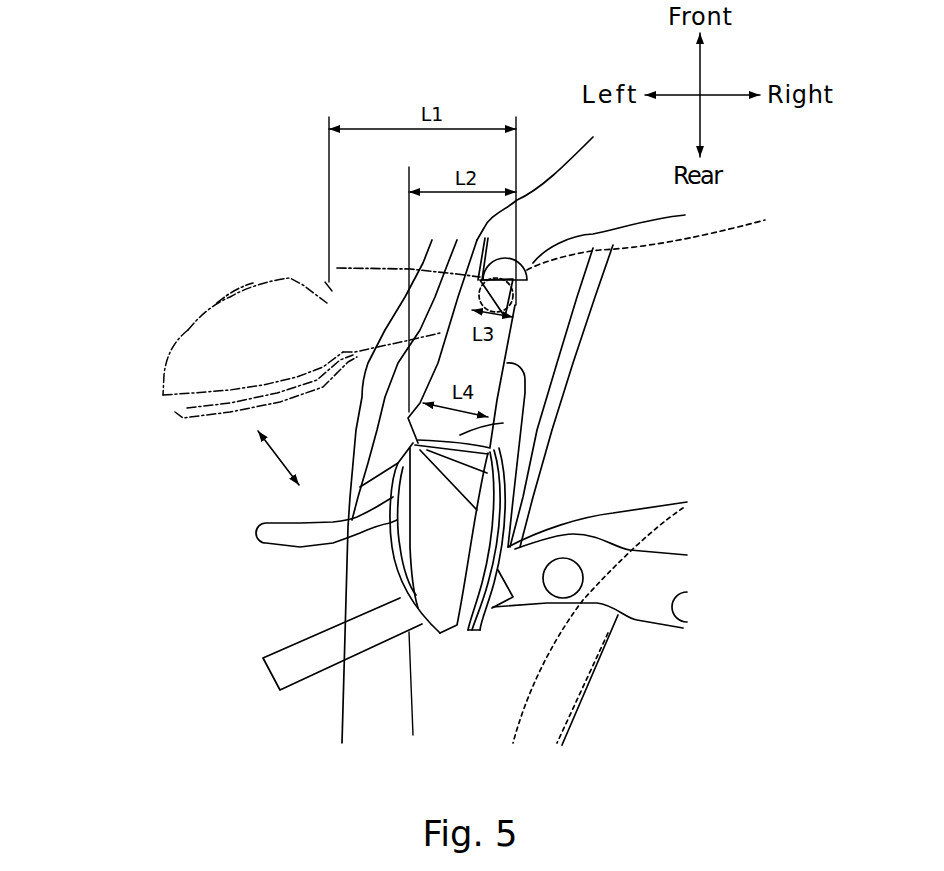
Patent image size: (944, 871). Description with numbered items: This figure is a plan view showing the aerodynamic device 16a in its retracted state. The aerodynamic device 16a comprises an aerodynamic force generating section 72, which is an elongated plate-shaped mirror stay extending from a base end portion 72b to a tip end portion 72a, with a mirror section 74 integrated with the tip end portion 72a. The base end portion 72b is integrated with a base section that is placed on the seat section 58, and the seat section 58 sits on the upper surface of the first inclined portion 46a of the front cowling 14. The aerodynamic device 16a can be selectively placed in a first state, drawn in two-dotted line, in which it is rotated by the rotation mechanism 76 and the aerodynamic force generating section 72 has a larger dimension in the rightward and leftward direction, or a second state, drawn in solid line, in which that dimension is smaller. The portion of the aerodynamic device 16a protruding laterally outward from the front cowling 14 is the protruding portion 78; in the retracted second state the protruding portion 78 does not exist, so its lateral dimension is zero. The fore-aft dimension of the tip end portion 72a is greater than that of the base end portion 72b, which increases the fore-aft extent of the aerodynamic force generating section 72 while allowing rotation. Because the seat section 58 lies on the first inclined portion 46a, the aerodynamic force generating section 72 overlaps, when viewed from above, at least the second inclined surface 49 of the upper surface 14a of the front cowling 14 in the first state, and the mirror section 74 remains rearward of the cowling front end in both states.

The front cowling 14 is at (335, 715).
The upper surface of the front cowling 14a is at (520, 354).
The aerodynamic device 16a is at (184, 330).
The first inclined portion 46a is at (625, 232).
The second inclined surface 49 is at (542, 175).
The seat section 58 is at (660, 236).
The aerodynamic force generating section 72 is at (372, 296).
The tip end portion 72a is at (303, 292).
The base end portion 72b is at (522, 282).
The mirror section 74 is at (457, 533).
The rotation mechanism 76 is at (515, 303).
The protruding portion 78 is at (223, 290).